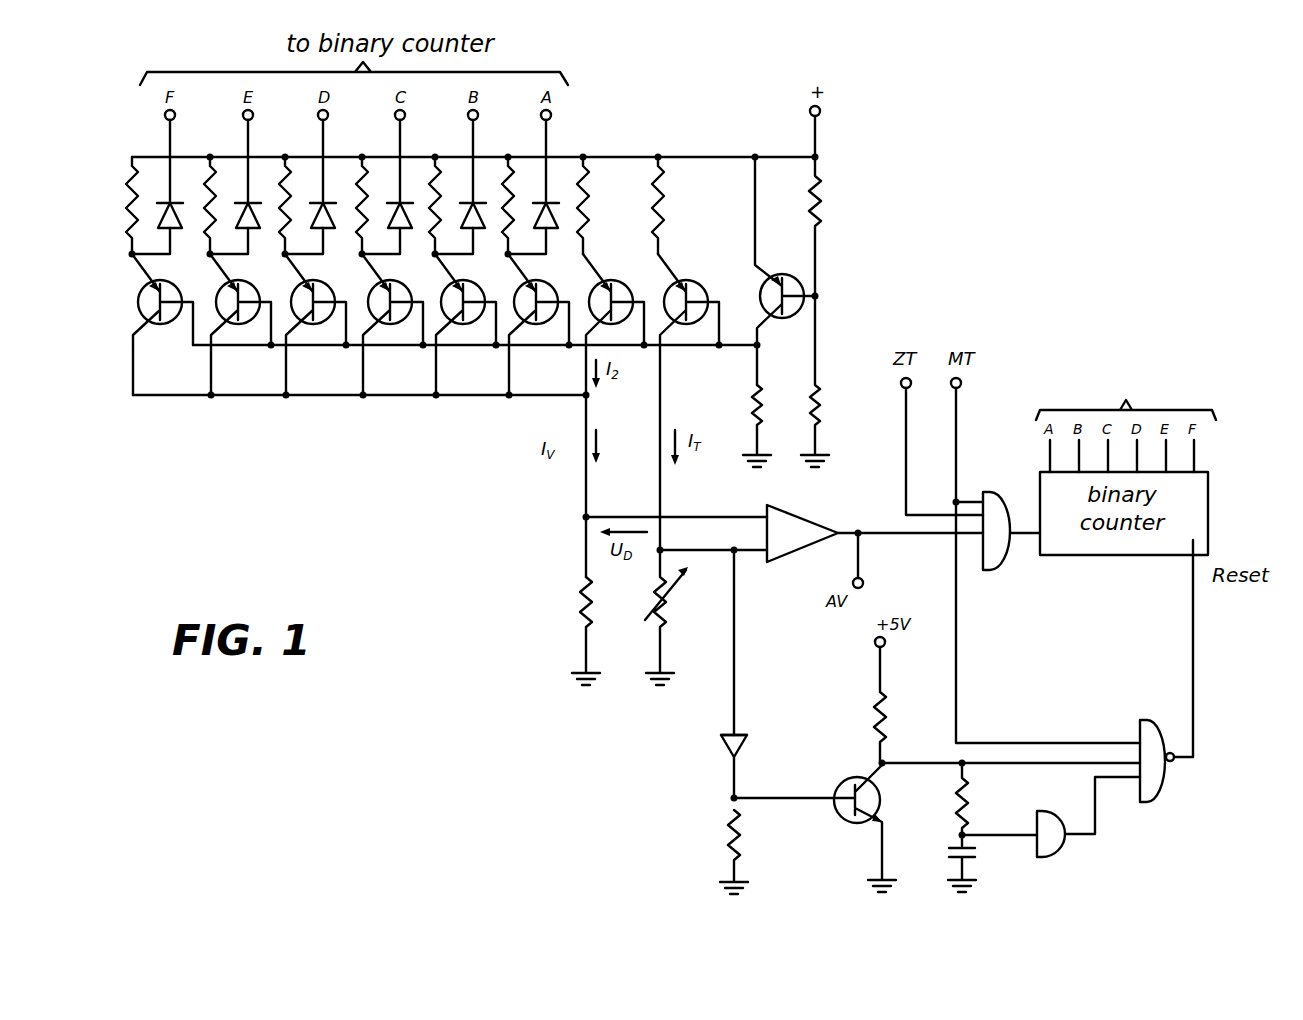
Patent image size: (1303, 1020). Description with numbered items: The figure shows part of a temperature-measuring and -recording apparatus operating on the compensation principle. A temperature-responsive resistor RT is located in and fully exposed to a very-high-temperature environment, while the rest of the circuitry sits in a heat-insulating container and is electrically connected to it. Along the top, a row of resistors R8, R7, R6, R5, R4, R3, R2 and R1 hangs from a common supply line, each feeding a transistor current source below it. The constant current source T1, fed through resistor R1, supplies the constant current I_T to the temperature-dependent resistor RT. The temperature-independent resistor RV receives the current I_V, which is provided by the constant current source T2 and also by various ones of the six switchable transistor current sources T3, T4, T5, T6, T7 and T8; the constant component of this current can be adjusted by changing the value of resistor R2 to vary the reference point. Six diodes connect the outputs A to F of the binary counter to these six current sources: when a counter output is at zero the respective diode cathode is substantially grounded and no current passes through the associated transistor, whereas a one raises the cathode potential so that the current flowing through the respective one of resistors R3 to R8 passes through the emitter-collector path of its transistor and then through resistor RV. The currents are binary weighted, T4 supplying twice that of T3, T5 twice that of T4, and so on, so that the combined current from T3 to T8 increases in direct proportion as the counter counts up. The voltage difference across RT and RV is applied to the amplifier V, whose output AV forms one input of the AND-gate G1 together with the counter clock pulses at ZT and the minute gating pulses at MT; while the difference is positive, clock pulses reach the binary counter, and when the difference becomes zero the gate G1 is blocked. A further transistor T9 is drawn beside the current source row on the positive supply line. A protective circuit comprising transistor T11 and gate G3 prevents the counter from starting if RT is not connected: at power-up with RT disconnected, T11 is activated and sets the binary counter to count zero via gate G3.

The resistor R1 is at (669, 205).
The resistor R2 is at (594, 205).
The resistor R3 is at (518, 205).
The resistor R4 is at (445, 205).
The resistor R5 is at (372, 205).
The resistor R6 is at (295, 205).
The resistor R7 is at (220, 205).
The resistor R8 is at (142, 205).
The constant current source transistor T1 is at (689, 402).
The constant current source transistor T2 is at (614, 324).
The transistor current source T3 is at (539, 324).
The transistor current source T4 is at (466, 324).
The transistor current source T5 is at (393, 324).
The transistor current source T6 is at (316, 324).
The transistor current source T7 is at (241, 324).
The transistor current source T8 is at (163, 324).
The transistor T9 is at (802, 271).
The transistor T11 is at (874, 828).
The temperature-independent resistor RV is at (568, 631).
The temperature-responsive resistor RT is at (669, 617).
The amplifier V is at (875, 546).
The AND-gate G1 is at (1011, 547).
The gate G3 is at (1162, 751).